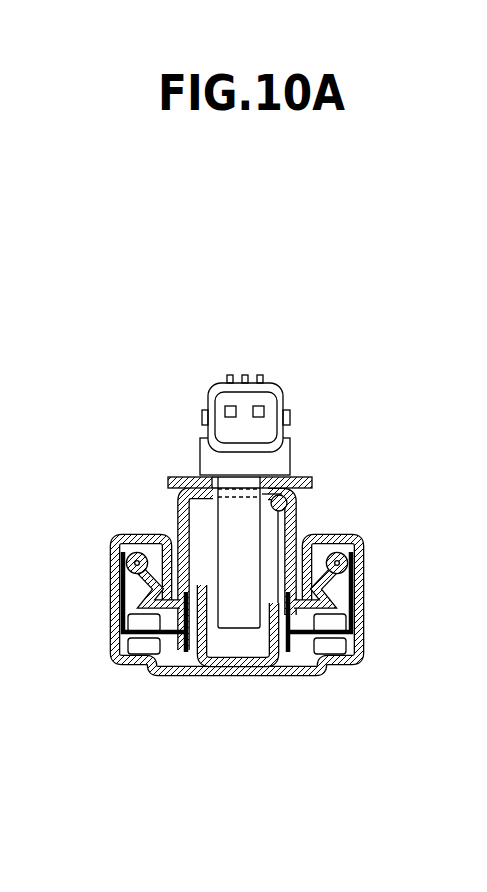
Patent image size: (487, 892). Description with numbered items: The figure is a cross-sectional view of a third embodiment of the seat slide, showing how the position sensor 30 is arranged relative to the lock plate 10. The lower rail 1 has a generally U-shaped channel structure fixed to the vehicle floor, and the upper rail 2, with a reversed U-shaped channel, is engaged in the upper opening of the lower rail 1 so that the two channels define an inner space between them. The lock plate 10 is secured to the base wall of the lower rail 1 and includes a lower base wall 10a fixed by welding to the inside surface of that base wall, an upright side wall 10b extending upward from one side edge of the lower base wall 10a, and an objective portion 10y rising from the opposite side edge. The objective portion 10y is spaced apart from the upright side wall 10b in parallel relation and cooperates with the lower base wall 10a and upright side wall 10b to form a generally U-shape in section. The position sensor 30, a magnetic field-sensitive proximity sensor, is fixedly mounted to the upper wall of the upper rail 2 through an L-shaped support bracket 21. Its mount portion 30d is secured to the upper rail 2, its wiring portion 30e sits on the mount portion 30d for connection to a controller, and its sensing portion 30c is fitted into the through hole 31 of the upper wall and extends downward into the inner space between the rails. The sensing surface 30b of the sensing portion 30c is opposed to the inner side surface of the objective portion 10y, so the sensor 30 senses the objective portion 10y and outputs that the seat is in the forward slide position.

The lower rail 1 is at (362, 617).
The upper rail 2 is at (297, 530).
The lock plate 10 is at (258, 642).
The lower base wall 10a is at (237, 660).
The upright side wall 10b is at (214, 600).
The objective portion 10y is at (306, 640).
The support bracket 21 is at (167, 478).
The position sensor 30 is at (275, 501).
The sensing surface 30b is at (297, 518).
The sensing portion 30c is at (243, 622).
The mount portion 30d is at (275, 462).
The wiring portion 30e is at (263, 398).
The through hole 31 is at (297, 500).